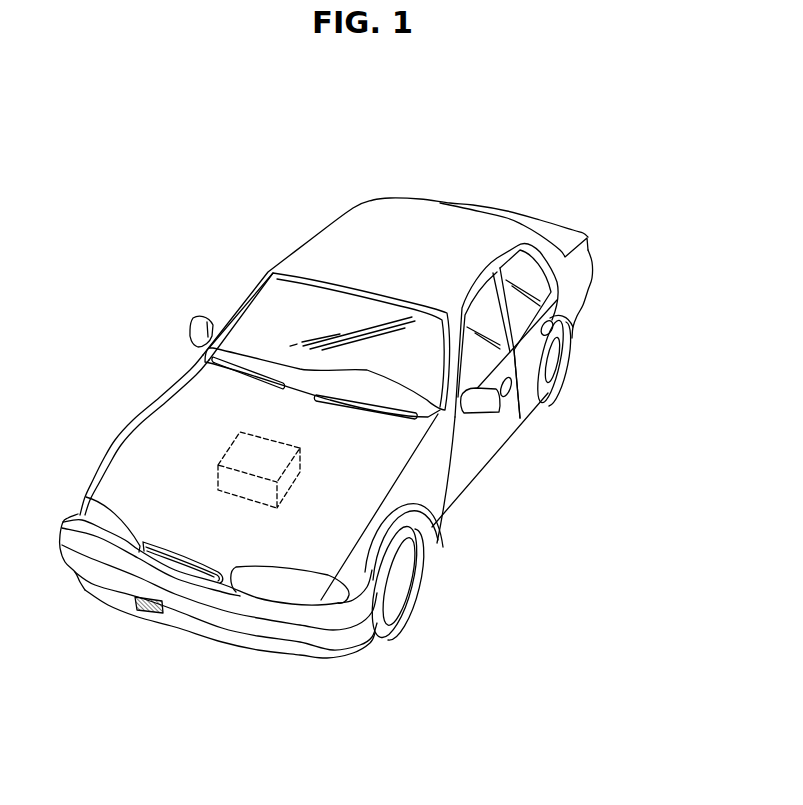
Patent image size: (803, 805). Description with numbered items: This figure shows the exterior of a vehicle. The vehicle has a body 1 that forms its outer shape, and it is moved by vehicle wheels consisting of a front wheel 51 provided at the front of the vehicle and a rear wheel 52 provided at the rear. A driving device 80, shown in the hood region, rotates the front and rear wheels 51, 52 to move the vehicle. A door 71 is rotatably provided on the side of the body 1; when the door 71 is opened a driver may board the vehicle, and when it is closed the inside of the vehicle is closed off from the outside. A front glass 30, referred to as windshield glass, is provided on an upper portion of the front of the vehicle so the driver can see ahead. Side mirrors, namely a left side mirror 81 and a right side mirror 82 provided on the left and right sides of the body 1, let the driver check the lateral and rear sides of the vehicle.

The body 1 is at (350, 421).
The front glass 30 is at (262, 303).
The front wheel 51 is at (400, 588).
The rear wheel 52 is at (557, 367).
The door 71 is at (511, 413).
The driving device 80 is at (238, 456).
The left side mirror 81 is at (484, 408).
The right side mirror 82 is at (189, 329).